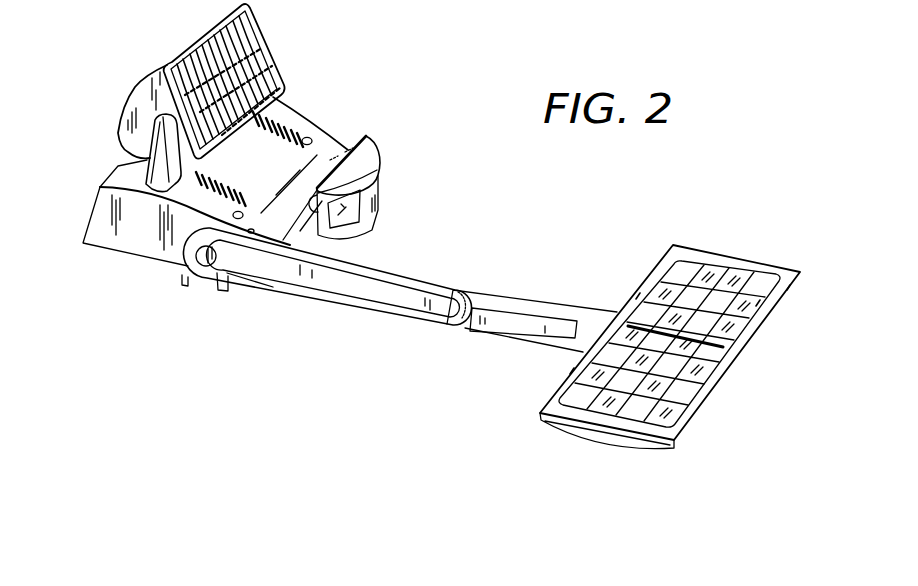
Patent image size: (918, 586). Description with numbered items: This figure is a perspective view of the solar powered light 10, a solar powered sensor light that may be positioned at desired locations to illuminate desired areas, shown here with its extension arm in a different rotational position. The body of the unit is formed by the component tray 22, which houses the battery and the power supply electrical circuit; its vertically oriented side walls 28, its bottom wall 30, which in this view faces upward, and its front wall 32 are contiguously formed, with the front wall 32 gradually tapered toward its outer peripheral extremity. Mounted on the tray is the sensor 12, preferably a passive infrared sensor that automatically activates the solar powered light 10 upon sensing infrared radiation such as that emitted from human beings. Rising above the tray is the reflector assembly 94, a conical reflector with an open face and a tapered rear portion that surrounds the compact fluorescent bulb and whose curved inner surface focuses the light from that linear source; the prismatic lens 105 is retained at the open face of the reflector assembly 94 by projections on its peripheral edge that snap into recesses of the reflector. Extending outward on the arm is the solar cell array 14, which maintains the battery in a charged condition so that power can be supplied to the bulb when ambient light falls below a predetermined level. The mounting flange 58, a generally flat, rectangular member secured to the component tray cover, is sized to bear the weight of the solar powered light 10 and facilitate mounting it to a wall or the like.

The solar powered light 10 is at (158, 318).
The sensor 12 is at (380, 190).
The solar cell array 14 is at (740, 343).
The component tray 22 is at (102, 213).
The side walls 28 is at (137, 238).
The bottom wall 30 is at (117, 167).
The front wall 32 is at (318, 157).
The mounting flange 58 is at (227, 287).
The reflector assembly 94 is at (118, 125).
The prismatic lens 105 is at (258, 55).